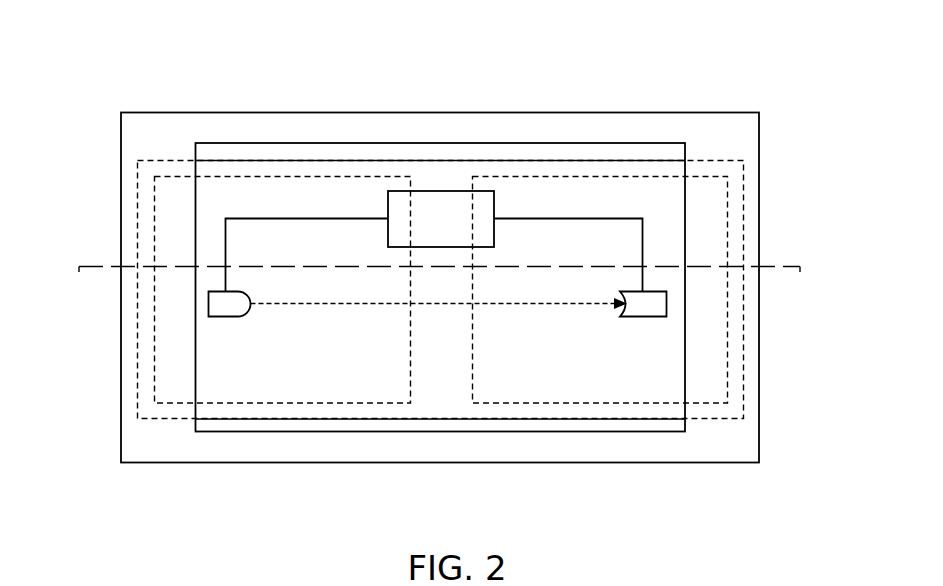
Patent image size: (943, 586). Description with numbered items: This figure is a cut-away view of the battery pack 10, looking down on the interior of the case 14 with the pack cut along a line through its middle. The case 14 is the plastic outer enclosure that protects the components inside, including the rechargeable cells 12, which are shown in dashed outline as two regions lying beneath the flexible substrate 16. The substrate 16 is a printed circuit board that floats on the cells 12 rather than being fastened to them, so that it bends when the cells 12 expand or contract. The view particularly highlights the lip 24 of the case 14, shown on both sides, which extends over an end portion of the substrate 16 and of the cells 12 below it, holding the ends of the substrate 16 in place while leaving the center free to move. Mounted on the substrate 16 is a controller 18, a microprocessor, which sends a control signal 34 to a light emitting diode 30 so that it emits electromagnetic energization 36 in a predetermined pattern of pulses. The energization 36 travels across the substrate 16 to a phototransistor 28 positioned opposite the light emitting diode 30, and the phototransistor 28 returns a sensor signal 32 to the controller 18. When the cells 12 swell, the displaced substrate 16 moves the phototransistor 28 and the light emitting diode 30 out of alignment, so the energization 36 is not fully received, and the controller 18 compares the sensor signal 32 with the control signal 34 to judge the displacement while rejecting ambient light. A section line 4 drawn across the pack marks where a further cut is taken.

The battery pack 10 is at (736, 60).
The cell 12 is at (297, 176).
The case 14 is at (513, 127).
The substrate 16 is at (620, 161).
The controller 18 is at (441, 219).
The lip 24 is at (187, 316).
The phototransistor 28 is at (638, 317).
The light emitting diode 30 is at (226, 317).
The sensor signal 32 is at (548, 218).
The control signal 34 is at (290, 218).
The electromagnetic energization 36 is at (364, 305).
The section line 4- 4 is at (439, 299).